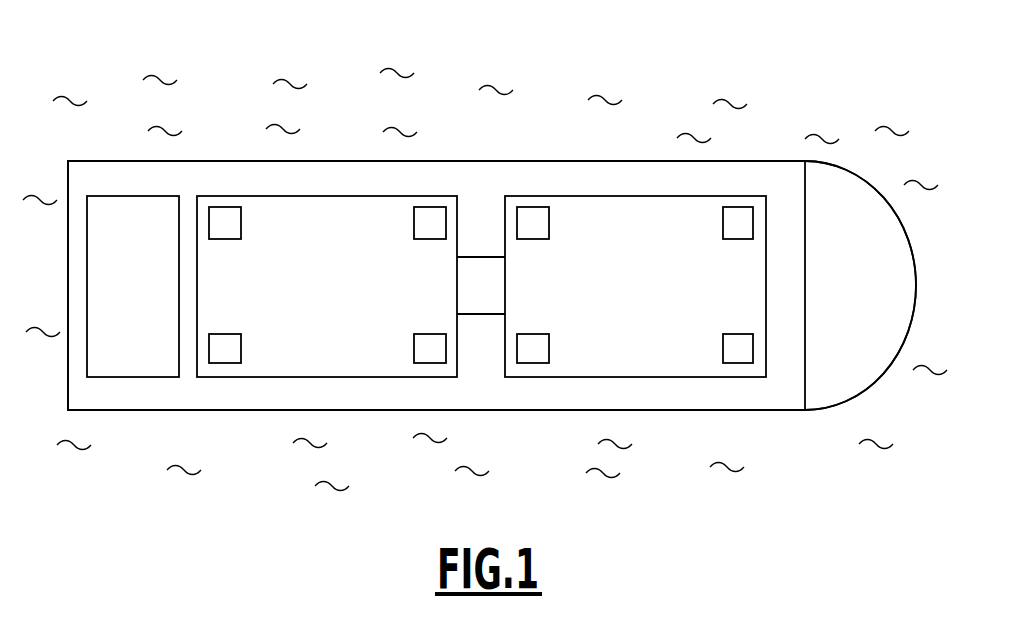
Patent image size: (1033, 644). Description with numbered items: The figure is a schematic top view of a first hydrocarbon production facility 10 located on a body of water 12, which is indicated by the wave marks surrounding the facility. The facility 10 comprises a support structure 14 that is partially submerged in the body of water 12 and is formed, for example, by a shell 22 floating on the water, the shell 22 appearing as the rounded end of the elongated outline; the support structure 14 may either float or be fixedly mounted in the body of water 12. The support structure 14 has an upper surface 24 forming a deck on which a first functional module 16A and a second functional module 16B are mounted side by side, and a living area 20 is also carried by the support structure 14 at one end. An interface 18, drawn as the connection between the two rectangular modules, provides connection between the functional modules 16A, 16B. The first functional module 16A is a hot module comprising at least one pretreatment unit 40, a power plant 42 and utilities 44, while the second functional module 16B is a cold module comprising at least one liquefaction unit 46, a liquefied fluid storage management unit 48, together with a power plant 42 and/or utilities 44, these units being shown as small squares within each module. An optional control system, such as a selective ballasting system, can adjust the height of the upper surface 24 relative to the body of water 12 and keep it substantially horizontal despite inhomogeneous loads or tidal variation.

The hydrocarbon production facility 10 is at (696, 86).
The body of water 12 is at (817, 455).
The support structure 14 is at (124, 436).
The first functional module 16A is at (344, 176).
The second functional module 16B is at (650, 175).
The interface 18 is at (471, 208).
The living area 20 is at (131, 194).
The shell 22 is at (786, 160).
The upper surface 24 is at (651, 388).
The pretreatment unit 40 is at (430, 212).
The power plant 42 is at (224, 210).
The utilities 44 is at (224, 355).
The liquefaction unit 46 is at (535, 215).
The liquefied fluid storage management unit 48 is at (737, 215).